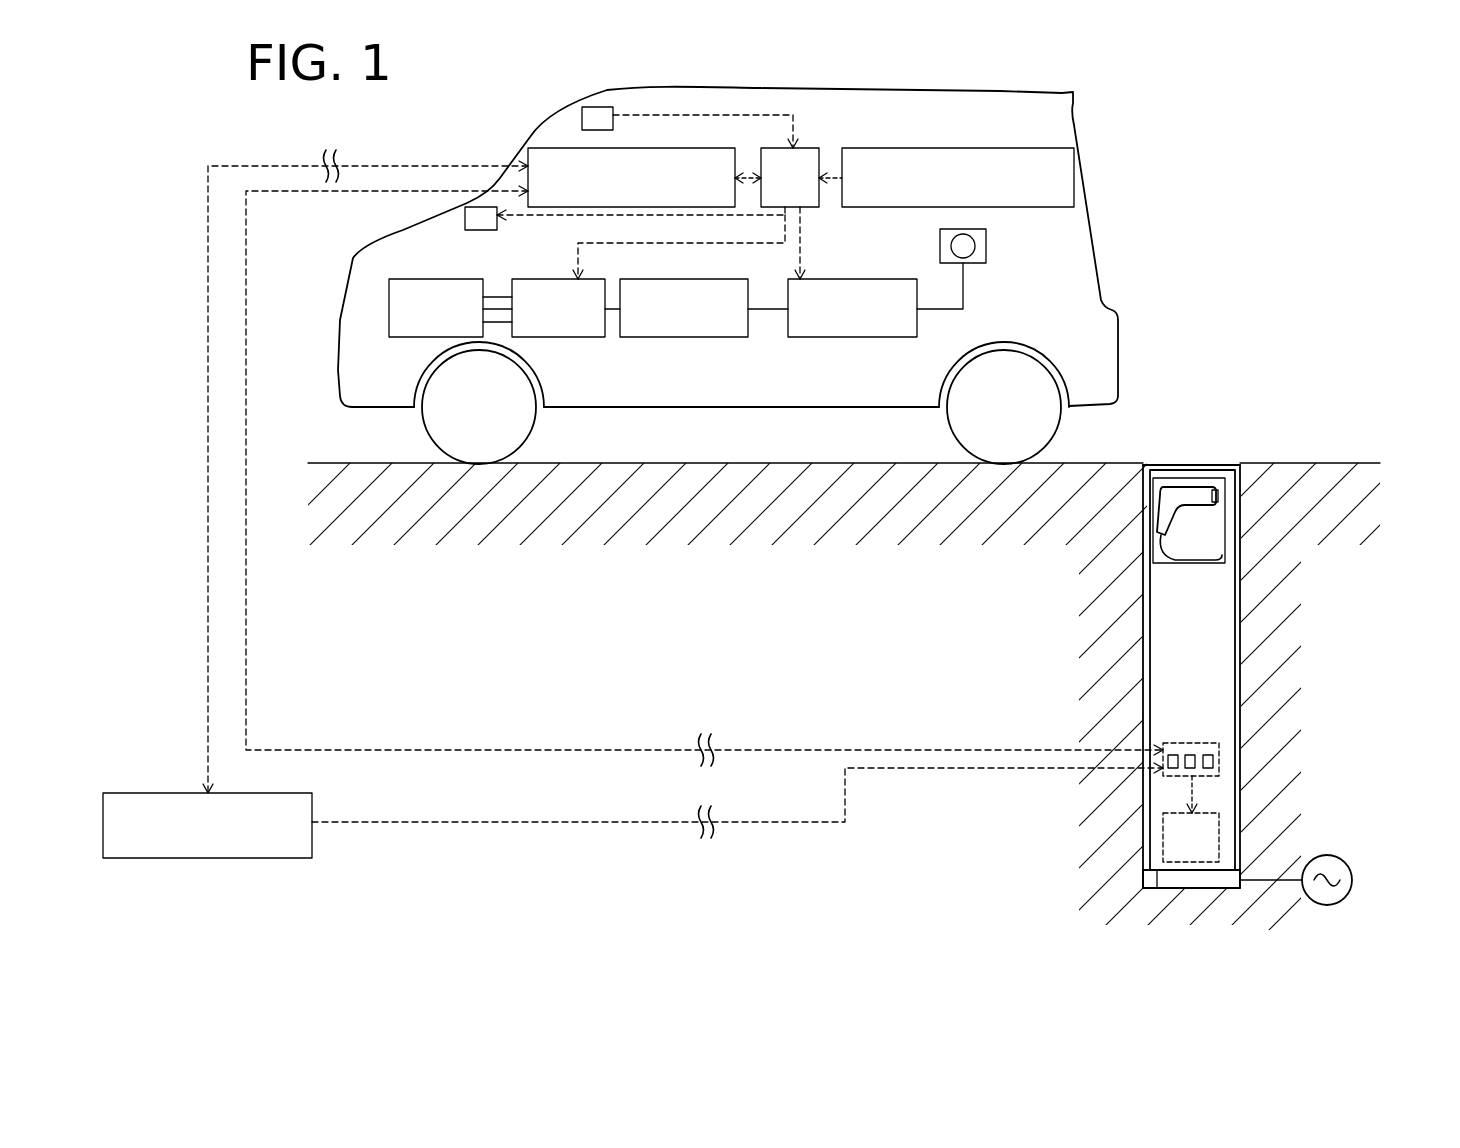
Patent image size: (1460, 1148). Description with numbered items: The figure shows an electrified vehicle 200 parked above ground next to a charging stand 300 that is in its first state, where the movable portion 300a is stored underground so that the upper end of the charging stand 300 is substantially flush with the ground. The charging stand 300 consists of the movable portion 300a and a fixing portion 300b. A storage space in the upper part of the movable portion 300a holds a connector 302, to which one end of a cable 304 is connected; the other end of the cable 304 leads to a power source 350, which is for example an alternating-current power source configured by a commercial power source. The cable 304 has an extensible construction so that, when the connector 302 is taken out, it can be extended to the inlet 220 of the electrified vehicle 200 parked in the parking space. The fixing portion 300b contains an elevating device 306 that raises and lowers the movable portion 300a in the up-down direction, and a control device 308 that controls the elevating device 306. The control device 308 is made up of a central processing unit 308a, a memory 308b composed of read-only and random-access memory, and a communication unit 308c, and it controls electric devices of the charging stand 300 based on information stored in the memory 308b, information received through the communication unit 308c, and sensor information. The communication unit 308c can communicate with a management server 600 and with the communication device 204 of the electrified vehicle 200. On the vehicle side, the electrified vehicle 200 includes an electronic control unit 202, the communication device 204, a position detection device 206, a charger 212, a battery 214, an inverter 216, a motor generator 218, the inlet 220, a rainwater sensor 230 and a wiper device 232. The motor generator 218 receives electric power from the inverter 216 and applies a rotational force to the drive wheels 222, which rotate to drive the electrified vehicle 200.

The electrified vehicle 200 is at (930, 91).
The electronic control unit (ECU) 202 is at (815, 150).
The communication device 204 is at (619, 150).
The position detection device 206 is at (990, 150).
The charger 212 is at (870, 279).
The battery 214 is at (697, 340).
The inverter 216 is at (537, 279).
The motor generator 218 is at (435, 279).
The inlet 220 is at (975, 263).
The drive wheels 222 is at (540, 390).
The rainwater sensor 230 is at (588, 105).
The wiper device 232 is at (465, 215).
The charging stand 300 is at (1216, 447).
The movable portion 300a is at (1228, 465).
The fixing portion 300b is at (1177, 883).
The connector 302 is at (1195, 510).
The cable 304 is at (1195, 565).
The elevating device 306 is at (1222, 837).
The control device 308 is at (1190, 760).
The central processing unit (CPU) 308a is at (1207, 753).
The memory 308b is at (1183, 745).
The communication unit 308c is at (1172, 770).
The power source 350 is at (1352, 880).
The management server 600 is at (245, 793).